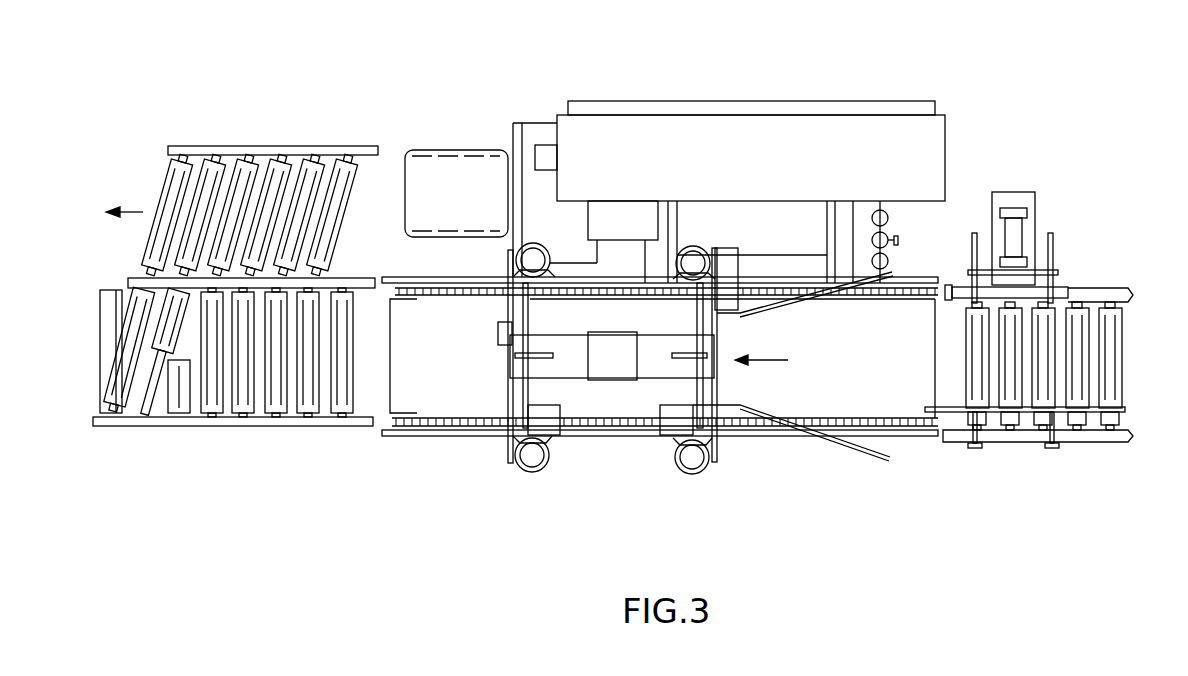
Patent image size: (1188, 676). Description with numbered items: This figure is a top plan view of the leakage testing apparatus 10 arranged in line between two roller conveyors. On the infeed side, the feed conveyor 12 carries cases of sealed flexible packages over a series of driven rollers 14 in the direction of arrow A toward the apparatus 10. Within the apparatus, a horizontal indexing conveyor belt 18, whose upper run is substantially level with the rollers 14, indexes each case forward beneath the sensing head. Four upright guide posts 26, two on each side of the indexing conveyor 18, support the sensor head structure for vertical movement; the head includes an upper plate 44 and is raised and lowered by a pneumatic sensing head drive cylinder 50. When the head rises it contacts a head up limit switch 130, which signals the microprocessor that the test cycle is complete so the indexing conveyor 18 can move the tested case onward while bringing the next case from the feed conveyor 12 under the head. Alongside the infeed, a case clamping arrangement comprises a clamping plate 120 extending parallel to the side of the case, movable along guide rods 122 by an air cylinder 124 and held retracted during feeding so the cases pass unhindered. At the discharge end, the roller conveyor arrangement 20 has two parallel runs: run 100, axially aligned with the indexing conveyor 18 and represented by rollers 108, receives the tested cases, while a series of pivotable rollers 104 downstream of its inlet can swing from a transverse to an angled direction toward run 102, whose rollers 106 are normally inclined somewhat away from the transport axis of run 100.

The apparatus 10 is at (726, 90).
The feed conveyor 12 is at (1110, 287).
The rollers 14 is at (1122, 372).
The indexing conveyor belt 18 is at (890, 376).
The roller conveyor arrangement 20 is at (221, 448).
The upright guide posts 26 is at (523, 258).
The upper plate 44 is at (548, 335).
The pneumatic sensing head drive cylinder 50 is at (620, 380).
The conveyor run 100 is at (292, 410).
The conveyor run 102 is at (283, 195).
The rollers 104 is at (130, 390).
The rollers 106 is at (160, 185).
The rollers 108 is at (353, 387).
The clamping plate 120 is at (1060, 297).
The guide rods 122 is at (972, 248).
The air cylinder 124 is at (1023, 233).
The head up limit switch 130 is at (498, 340).